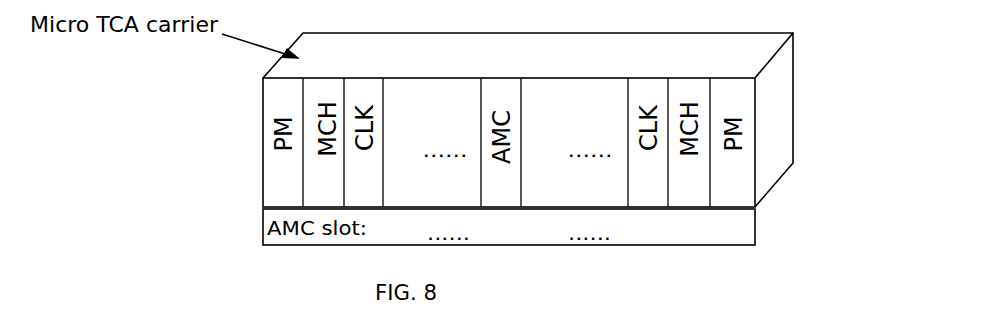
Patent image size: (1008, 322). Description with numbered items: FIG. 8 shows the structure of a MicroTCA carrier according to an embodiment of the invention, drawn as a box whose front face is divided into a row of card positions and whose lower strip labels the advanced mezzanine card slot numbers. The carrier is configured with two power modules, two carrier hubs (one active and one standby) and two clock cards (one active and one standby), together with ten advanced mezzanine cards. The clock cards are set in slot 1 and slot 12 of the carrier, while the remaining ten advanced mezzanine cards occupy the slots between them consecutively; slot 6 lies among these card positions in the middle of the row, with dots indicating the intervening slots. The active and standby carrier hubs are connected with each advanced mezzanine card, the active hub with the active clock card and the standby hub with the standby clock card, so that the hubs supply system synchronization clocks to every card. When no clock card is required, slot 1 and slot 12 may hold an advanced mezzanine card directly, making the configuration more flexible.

The slot 1 is at (378, 224).
The AMC slot 6 is at (501, 224).
The slot 12 is at (647, 224).